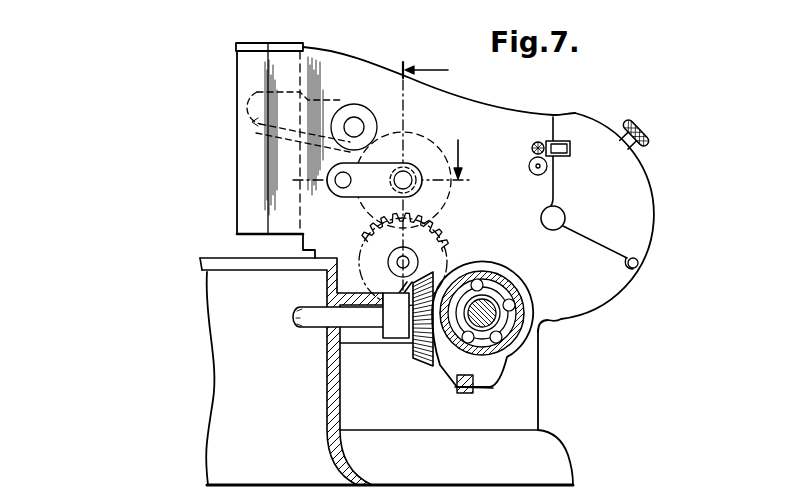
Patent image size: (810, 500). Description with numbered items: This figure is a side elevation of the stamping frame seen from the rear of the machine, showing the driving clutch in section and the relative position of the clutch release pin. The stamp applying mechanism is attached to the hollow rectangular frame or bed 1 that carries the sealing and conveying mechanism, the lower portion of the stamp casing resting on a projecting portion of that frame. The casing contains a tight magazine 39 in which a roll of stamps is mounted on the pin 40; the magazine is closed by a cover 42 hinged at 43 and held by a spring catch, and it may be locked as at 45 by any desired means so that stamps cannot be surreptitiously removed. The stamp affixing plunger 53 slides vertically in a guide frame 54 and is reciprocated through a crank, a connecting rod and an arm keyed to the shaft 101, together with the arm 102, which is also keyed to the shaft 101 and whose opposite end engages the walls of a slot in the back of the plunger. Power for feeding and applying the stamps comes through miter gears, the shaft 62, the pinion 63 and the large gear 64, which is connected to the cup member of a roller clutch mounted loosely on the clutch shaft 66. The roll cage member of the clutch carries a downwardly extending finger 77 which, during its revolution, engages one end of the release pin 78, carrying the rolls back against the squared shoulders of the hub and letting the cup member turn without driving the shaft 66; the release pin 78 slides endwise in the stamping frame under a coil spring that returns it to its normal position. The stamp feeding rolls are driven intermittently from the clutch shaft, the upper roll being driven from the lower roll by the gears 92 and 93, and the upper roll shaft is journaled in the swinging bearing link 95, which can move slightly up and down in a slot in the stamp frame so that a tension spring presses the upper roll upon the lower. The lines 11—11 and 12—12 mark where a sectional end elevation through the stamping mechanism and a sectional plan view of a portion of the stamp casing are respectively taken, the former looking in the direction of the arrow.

The frame 1 is at (212, 262).
The section line 11— 11 is at (421, 167).
The section line 12— 12 is at (388, 166).
The magazine 39 is at (608, 293).
The pin 40 is at (556, 218).
The cover 42 is at (643, 182).
The hinge 43 is at (640, 262).
The lock 45 is at (546, 148).
The plunger 53 is at (266, 48).
The guide frame 54 is at (250, 88).
The shaft 62 is at (306, 321).
The pinion 63 is at (412, 350).
The large gear 64 is at (430, 366).
The clutch shaft 66 is at (504, 289).
The finger 77 is at (498, 382).
The release pin 78 is at (467, 395).
The gear 92 is at (442, 242).
The gear 93 is at (415, 153).
The swinging bearing link 95 is at (373, 184).
The shaft 101 is at (351, 132).
The arm 102 is at (317, 112).